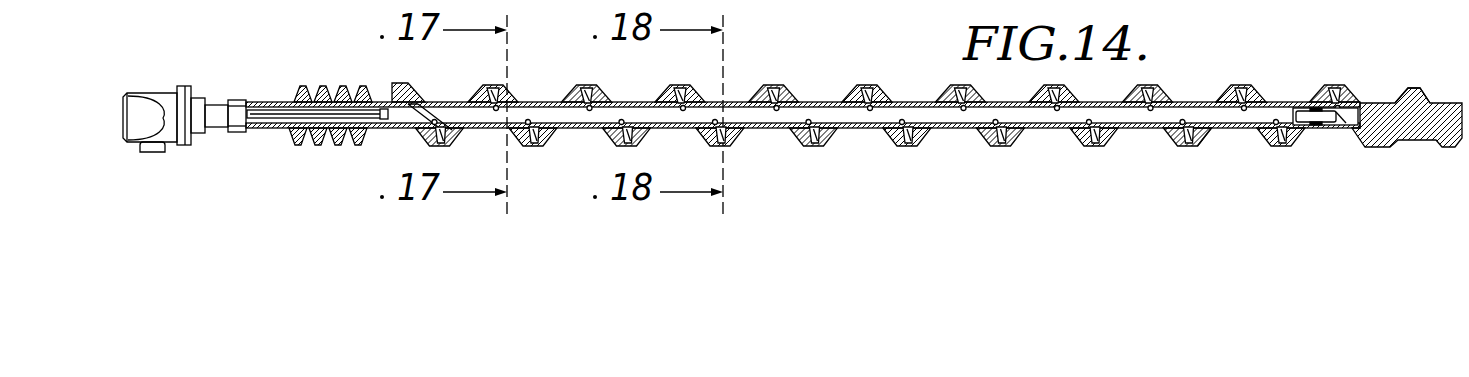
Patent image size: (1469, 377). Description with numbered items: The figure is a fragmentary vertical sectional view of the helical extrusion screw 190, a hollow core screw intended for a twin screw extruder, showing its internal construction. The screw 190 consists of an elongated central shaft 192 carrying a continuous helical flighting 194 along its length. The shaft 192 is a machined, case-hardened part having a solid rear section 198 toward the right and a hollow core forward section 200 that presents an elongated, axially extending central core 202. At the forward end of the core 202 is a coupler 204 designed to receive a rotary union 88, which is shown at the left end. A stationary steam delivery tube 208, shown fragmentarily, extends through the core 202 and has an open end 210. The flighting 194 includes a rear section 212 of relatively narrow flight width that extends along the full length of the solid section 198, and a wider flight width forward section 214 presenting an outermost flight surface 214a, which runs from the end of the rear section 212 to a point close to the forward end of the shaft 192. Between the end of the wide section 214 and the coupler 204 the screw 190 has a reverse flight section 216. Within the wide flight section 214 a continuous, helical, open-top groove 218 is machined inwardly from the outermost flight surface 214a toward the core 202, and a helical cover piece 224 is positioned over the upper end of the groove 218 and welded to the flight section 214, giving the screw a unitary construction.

The rotary union 88 is at (157, 99).
The coupler 204 is at (236, 99).
The reverse flight section 216 is at (318, 93).
The stationary steam delivery tube 208 is at (375, 118).
The helical extrusion screw 190 is at (1044, 168).
The central shaft 192 is at (913, 68).
The helical flighting 194 is at (1236, 40).
The solid rear section 198 is at (1426, 122).
The hollow core forward section 200 is at (775, 131).
The central core 202 is at (956, 121).
The open end 210 is at (1336, 126).
The rear flight section 212 is at (1414, 89).
The wider flight width forward section 214 is at (1180, 148).
The outermost flight surface 214a is at (1192, 147).
The helical open-top groove 218 is at (769, 95).
The helical cover piece 224 is at (870, 88).